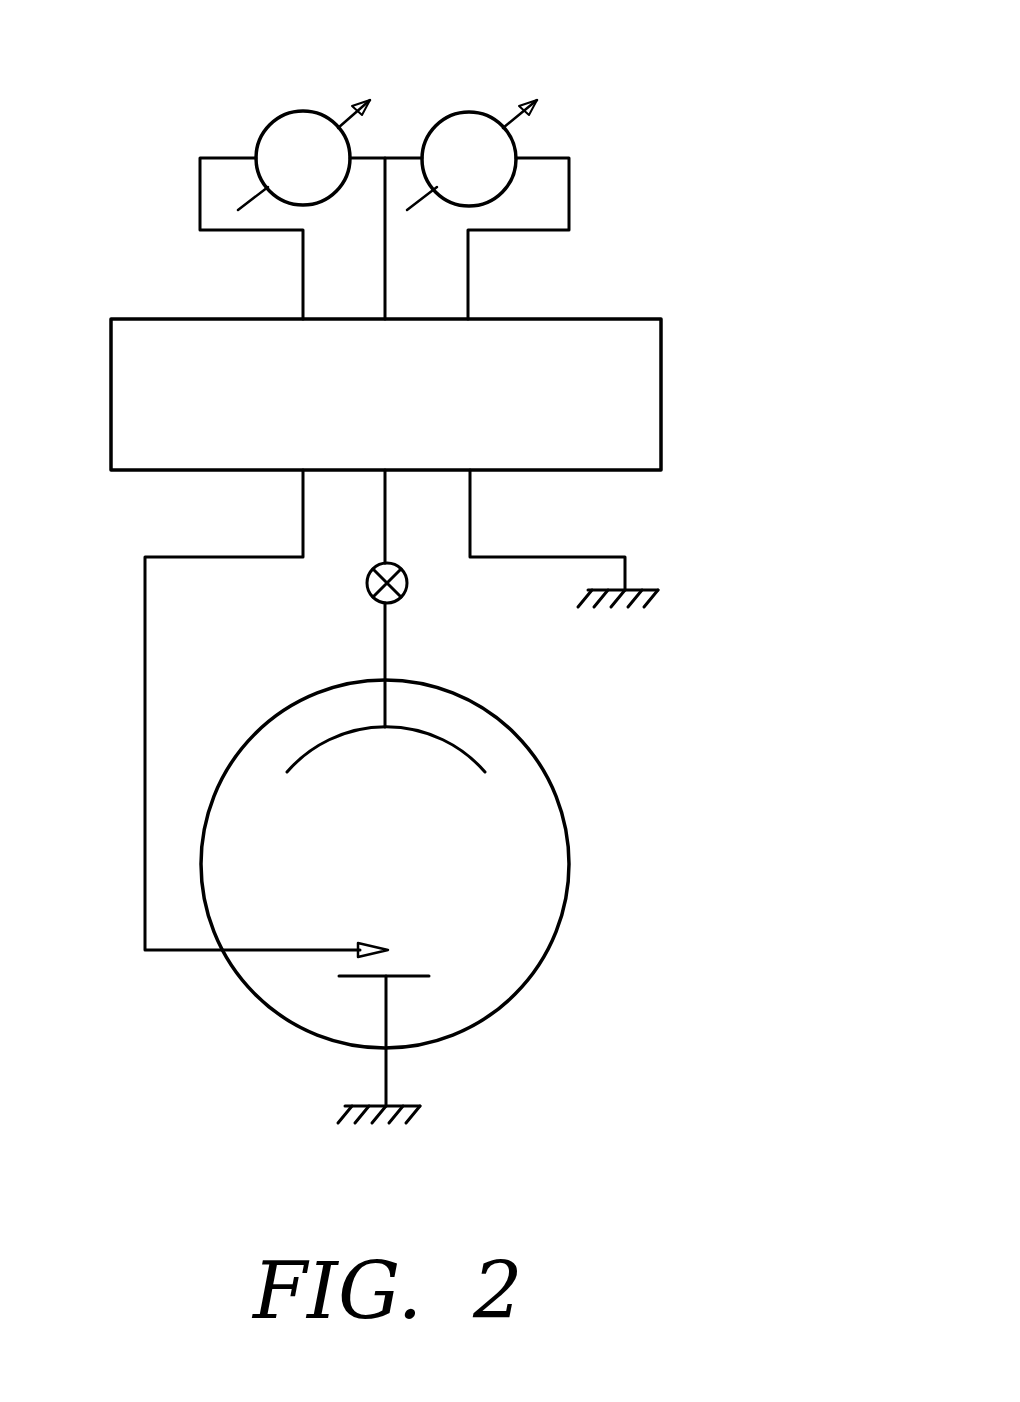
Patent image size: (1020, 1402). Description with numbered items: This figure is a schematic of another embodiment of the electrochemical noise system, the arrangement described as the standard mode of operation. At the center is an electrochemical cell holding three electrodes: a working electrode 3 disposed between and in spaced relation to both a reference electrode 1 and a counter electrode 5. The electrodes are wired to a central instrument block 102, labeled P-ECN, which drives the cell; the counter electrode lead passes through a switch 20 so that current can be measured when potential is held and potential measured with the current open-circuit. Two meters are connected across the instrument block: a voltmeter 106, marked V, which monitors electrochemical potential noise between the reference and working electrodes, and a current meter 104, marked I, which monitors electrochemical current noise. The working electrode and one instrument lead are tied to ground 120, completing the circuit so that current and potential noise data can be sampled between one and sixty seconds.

The reference electrode 1 is at (268, 950).
The working electrode 3 is at (420, 973).
The counter electrode 5 is at (461, 752).
The switch 20 is at (366, 586).
The P-ECN potentiostat / electrochemical noise unit 102 is at (661, 391).
The ammeter (current meter) 104 is at (463, 113).
The voltmeter 106 is at (277, 117).
The ground 120 is at (649, 590).